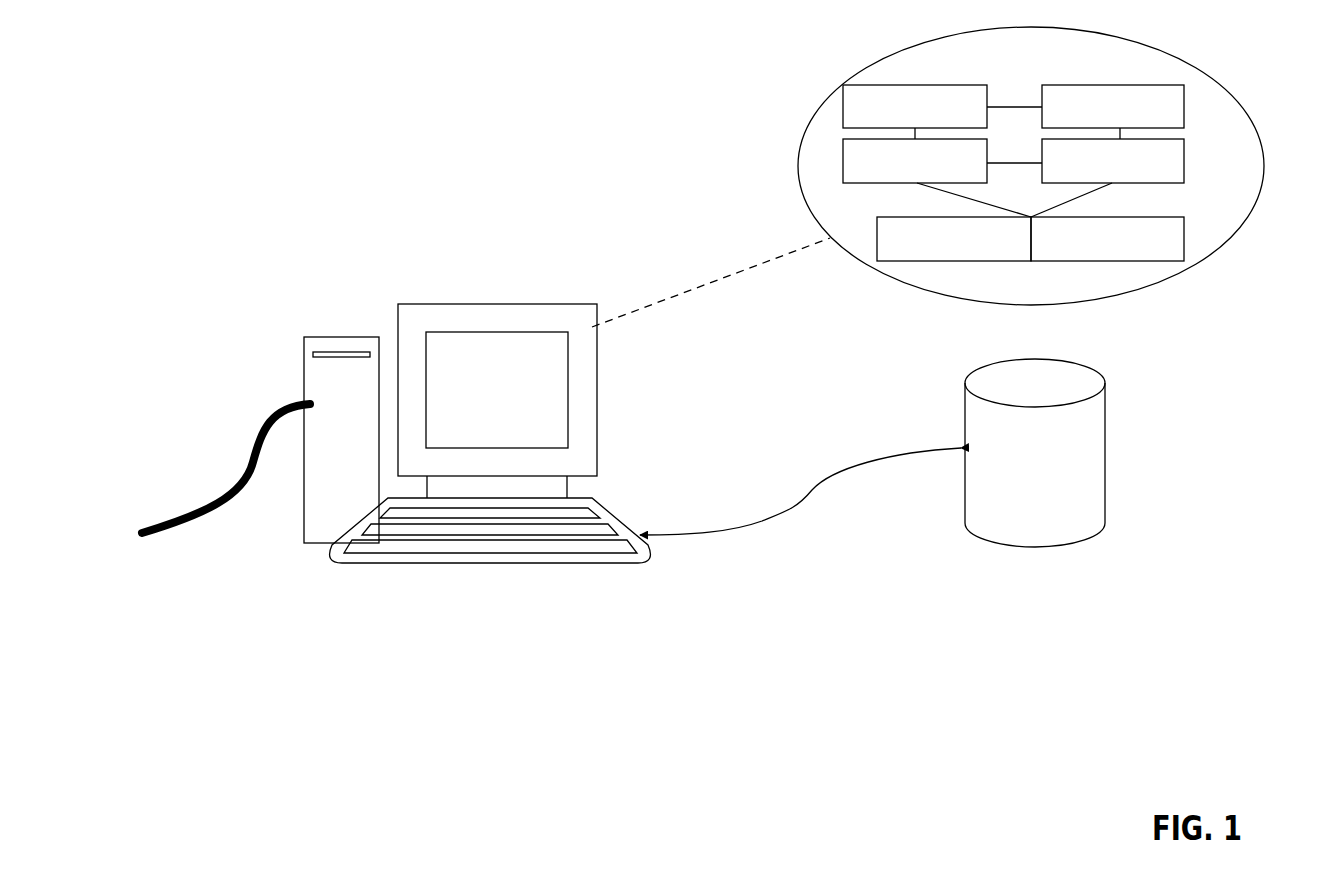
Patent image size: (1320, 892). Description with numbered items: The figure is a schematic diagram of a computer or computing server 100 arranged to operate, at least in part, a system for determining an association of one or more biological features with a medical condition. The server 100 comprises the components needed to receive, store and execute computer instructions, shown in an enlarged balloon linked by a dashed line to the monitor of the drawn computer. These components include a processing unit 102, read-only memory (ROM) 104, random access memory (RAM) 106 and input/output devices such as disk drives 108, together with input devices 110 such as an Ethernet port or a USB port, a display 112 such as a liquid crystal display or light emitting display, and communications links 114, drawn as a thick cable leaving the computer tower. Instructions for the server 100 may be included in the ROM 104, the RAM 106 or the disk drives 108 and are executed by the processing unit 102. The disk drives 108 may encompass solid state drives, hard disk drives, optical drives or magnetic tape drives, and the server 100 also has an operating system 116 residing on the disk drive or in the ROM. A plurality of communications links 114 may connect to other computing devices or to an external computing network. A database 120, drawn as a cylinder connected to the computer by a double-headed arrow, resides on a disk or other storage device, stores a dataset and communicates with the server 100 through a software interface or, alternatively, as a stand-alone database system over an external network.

The computing server 100 is at (478, 456).
The processing unit 102 is at (942, 112).
The read-only memory (ROM) 104 is at (1113, 112).
The random access memory (RAM) 106 is at (942, 178).
The disk drives 108 is at (1107, 178).
The input devices 110 is at (954, 239).
The display 112 is at (504, 289).
The communications links 114 is at (226, 495).
The operating system 116 is at (1107, 239).
The database 120 is at (872, 453).